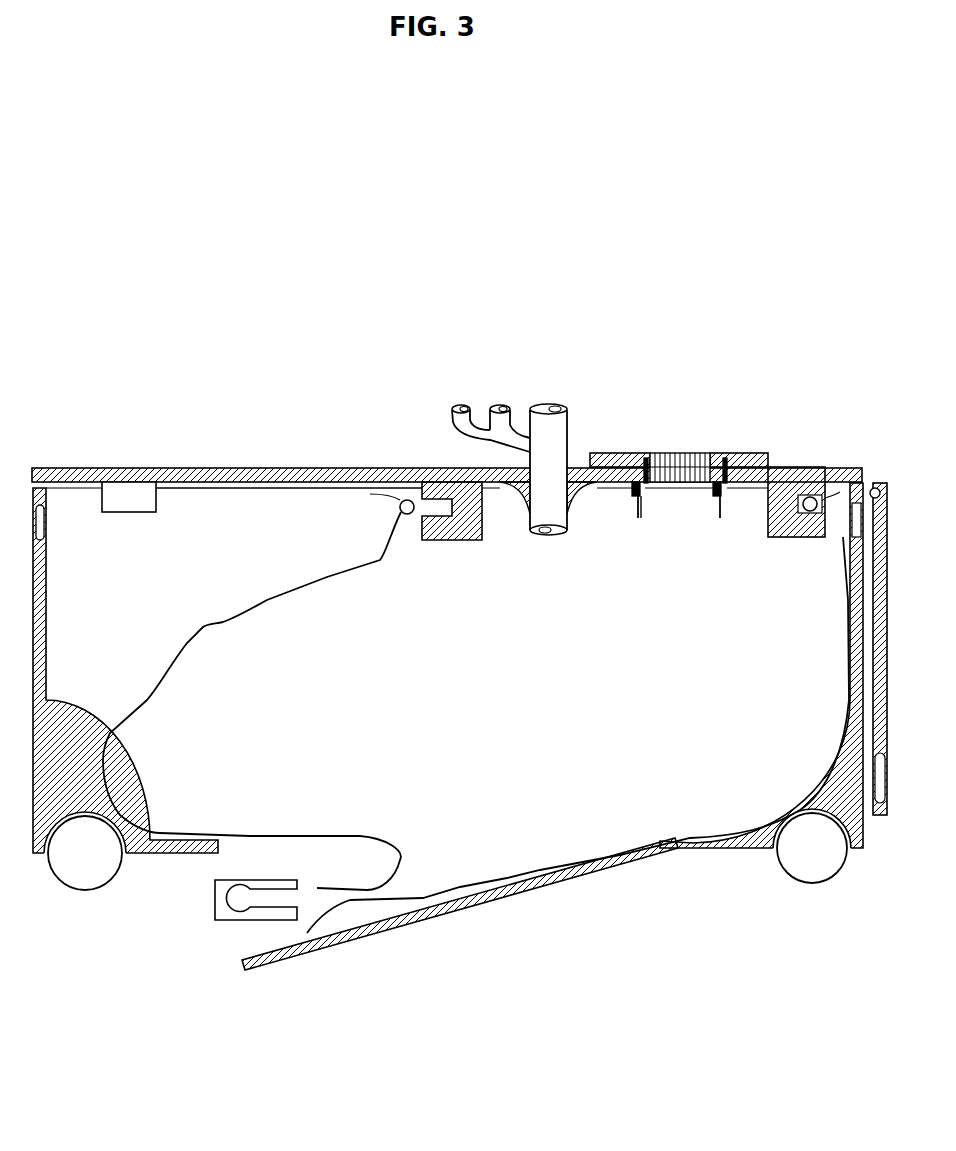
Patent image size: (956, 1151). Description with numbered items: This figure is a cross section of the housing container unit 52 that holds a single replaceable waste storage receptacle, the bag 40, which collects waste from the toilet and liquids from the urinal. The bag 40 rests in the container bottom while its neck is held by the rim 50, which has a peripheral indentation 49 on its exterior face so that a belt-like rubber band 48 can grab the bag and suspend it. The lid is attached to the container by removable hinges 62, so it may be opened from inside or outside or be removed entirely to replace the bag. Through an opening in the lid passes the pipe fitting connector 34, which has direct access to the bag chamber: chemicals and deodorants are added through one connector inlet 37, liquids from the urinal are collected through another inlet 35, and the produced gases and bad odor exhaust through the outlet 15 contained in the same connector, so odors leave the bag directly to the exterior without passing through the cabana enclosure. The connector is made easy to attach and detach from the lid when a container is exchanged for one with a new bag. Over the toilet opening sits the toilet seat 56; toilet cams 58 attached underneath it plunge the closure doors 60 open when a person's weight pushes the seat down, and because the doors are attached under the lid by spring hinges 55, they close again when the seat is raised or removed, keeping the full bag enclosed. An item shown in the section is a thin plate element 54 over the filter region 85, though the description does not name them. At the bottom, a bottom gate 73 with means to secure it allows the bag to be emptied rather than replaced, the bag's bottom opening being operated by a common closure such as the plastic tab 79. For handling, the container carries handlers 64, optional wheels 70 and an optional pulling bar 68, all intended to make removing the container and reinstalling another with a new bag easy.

The outlet 15 is at (548, 403).
The pipe fitting connector 34 is at (548, 469).
The inlet 35 is at (466, 392).
The connector inlet 37 is at (506, 392).
The bag 40 is at (146, 700).
The rubber band 48 is at (403, 512).
The peripheral indentation 49 is at (430, 508).
The rim 50 is at (815, 537).
The housing container unit 52 is at (238, 488).
The top plate 54 is at (282, 466).
The spring hinges 55 is at (630, 493).
The toilet seat 56 is at (728, 453).
The toilet cams 58 is at (713, 490).
The closure doors 60 is at (642, 520).
The removable hinges 62 is at (155, 513).
The handlers 64 is at (45, 523).
The pulling bar 68 is at (888, 817).
The wheels 70 is at (113, 880).
The bottom gate 73 is at (507, 897).
The plastic tab 79 is at (213, 915).
The filter screen 85 is at (668, 482).